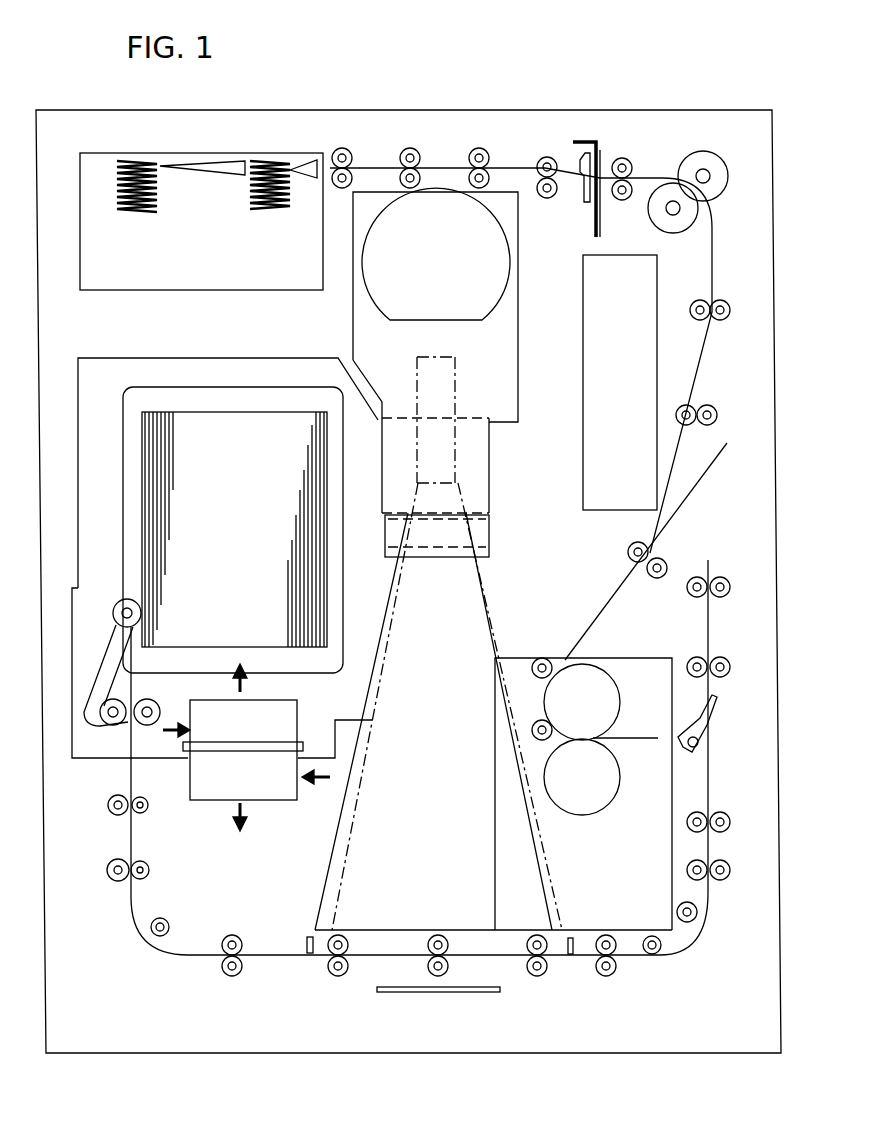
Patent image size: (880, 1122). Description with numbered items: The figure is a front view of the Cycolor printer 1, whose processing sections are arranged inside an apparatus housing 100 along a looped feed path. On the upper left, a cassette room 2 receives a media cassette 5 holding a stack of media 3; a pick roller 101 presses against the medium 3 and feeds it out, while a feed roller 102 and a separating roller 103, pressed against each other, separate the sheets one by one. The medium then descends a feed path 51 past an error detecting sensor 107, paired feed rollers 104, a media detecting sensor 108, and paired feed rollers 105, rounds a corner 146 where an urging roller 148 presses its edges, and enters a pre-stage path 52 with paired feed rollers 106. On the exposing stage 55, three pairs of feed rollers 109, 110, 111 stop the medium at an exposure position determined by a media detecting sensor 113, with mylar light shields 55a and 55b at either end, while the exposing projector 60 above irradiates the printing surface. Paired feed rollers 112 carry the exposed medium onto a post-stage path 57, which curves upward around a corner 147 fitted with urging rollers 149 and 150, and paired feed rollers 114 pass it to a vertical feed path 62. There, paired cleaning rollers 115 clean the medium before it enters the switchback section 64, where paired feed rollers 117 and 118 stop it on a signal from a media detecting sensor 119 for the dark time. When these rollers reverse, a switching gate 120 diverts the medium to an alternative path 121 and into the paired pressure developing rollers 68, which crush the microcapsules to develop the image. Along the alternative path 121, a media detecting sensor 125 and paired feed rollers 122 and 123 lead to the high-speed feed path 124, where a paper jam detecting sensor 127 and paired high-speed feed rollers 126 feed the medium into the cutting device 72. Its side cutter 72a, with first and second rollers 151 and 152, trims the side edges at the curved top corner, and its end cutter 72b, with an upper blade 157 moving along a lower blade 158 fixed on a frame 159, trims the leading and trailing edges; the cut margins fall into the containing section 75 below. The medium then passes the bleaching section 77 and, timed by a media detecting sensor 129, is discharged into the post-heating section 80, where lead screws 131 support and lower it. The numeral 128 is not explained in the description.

The Cycolor printer 1 is at (352, 88).
The apparatus housing 100 is at (288, 110).
The post-heating section 80 is at (253, 300).
The lead screws 131 is at (158, 206).
The cassette room 2 is at (146, 358).
The medium 3 is at (213, 420).
The media cassette 5 is at (258, 378).
The media detecting sensor 129 is at (373, 192).
The exposing projector 60 is at (494, 460).
The bleaching section 77 is at (400, 134).
The paired high-speed feed rollers 126 is at (348, 150).
The upper blade 157 is at (586, 181).
The lower blade 158 is at (578, 200).
The frame 159 is at (600, 224).
The cutting device 72 is at (648, 120).
The side cutter 72a is at (704, 152).
The end cutter 72b is at (591, 242).
The first roller 151 is at (718, 180).
The second roller 152 is at (692, 236).
The sheet conveying direction 128 is at (650, 170).
The containing section 75 is at (583, 362).
The paper jam detecting sensor 127 is at (694, 338).
The paired feed rollers 123 is at (684, 418).
The high-speed feed path 124 is at (712, 398).
The media detecting sensor 125 is at (620, 568).
The paired feed rollers 122 is at (628, 550).
The switchback section 64 is at (758, 643).
The paired feed rollers 118 is at (692, 592).
The media detecting sensor 119 is at (720, 640).
The paired feed rollers 117 is at (688, 662).
The paired cleaning rollers 115 is at (726, 814).
The paired feed rollers 114 is at (728, 864).
The feed path 62 is at (708, 850).
The urging roller 150 is at (698, 913).
The corner 147 is at (716, 942).
The urging roller 149 is at (650, 956).
The post-stage path 57 is at (668, 960).
The exposing stage 55 is at (372, 968).
The paired feed rollers 112 is at (608, 976).
The paired feed rollers 111 is at (548, 972).
The paired feed rollers 110 is at (441, 935).
The paired feed rollers 109 is at (328, 968).
The media detecting sensor 113 is at (504, 978).
The mylar light shield 55a is at (307, 938).
The mylar light shield 55b is at (575, 937).
The pre-stage path 52 is at (216, 958).
The paired feed rollers 106 is at (241, 940).
The corner 146 is at (146, 950).
The feed path 51 is at (133, 914).
The urging roller 148 is at (170, 921).
The paired pressure developing rollers 68 is at (530, 700).
The alternative path 121 is at (628, 738).
The switching gate 120 is at (672, 752).
The pick roller 101 is at (113, 616).
The feed roller 102 is at (108, 724).
The separating roller 103 is at (156, 707).
The error detecting sensor 107 is at (120, 787).
The paired feed rollers 104 is at (148, 800).
The media detecting sensor 108 is at (120, 851).
The paired feed rollers 105 is at (150, 862).